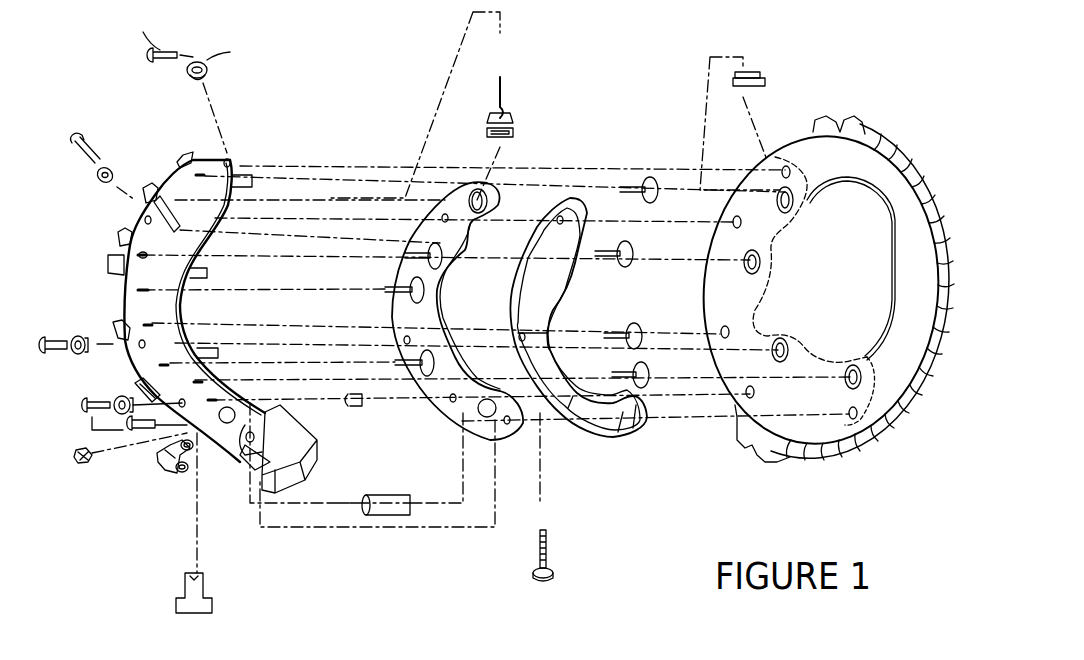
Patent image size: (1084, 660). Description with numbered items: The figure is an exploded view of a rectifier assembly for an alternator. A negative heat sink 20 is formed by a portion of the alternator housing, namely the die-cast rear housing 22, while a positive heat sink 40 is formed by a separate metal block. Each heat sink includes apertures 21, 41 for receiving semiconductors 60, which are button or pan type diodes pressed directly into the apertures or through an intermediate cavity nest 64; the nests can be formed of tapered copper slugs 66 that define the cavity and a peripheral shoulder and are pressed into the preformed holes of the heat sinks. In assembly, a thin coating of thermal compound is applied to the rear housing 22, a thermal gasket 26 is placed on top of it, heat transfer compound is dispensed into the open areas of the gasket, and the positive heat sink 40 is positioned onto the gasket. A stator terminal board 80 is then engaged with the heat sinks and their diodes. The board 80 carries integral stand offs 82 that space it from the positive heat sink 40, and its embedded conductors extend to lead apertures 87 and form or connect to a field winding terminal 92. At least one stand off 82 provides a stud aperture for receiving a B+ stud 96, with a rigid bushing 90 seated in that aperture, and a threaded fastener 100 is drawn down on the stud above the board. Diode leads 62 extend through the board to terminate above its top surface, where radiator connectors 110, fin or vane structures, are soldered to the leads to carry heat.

The negative heat sink 20 is at (800, 430).
The aperture 21 is at (800, 200).
The rear housing 22 is at (840, 145).
The thermal gasket 26 is at (632, 440).
The positive heat sink 40 is at (462, 180).
The aperture 41 is at (495, 204).
The semiconductor 60 is at (442, 262).
The diode lead 62 is at (135, 187).
The cavity nest 64 is at (512, 128).
The tapered copper slug 66 is at (520, 134).
The stator terminal board 80 is at (128, 300).
The integral stand off 82 is at (252, 180).
The lead aperture 87 is at (143, 256).
The rigid bushing 90 is at (378, 492).
The field winding terminal 92 is at (190, 152).
The B+ stud 96 is at (548, 528).
The fastener 100 is at (212, 610).
The radiator connector 110 is at (172, 208).